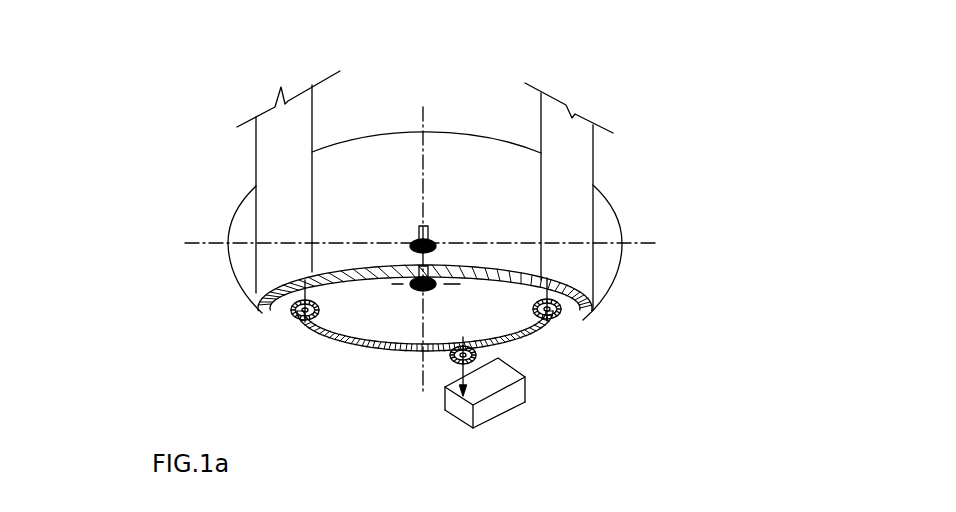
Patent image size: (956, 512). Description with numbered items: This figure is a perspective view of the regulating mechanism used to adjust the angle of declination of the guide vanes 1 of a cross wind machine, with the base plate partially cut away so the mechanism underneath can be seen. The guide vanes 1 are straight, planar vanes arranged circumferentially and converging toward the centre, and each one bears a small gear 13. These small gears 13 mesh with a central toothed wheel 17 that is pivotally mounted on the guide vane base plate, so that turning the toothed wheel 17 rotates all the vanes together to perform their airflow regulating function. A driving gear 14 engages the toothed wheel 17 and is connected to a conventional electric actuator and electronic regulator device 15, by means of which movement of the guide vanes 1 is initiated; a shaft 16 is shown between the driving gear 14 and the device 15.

The guide vanes 1 is at (257, 222).
The small gear 13 is at (281, 322).
The driving gear 14 is at (434, 368).
The electric actuator and electronic regulator device 15 is at (488, 415).
The drive shaft 16 is at (485, 387).
The central toothed wheel 17 is at (380, 285).